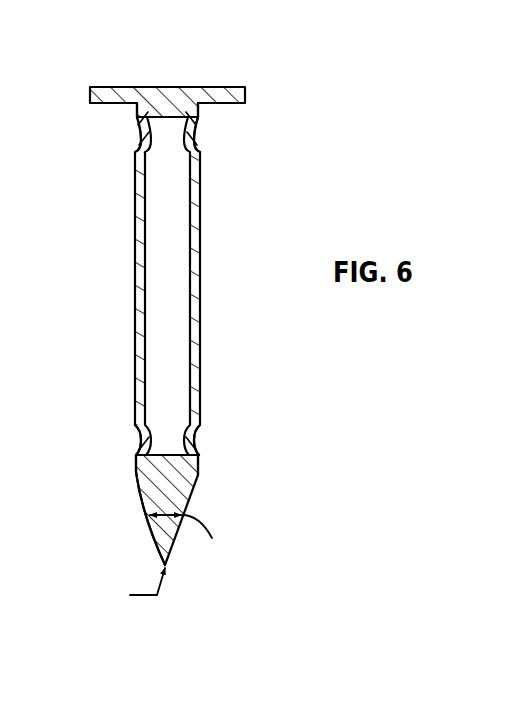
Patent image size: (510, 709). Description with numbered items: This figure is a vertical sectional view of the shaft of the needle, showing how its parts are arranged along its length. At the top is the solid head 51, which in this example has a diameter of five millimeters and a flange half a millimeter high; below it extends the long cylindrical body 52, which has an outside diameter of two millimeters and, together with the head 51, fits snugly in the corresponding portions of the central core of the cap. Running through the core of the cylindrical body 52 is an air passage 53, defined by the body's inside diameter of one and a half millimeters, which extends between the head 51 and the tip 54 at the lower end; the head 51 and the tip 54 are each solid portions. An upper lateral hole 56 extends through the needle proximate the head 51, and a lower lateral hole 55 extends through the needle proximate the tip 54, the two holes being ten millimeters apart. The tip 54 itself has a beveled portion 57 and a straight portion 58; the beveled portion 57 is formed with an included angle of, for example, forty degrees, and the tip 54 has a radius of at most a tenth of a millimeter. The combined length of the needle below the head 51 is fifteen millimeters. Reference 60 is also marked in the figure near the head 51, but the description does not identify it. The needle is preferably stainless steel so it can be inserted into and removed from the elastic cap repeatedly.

The head 51 is at (232, 118).
The cylindrical body 52 is at (230, 305).
The air passage 53 is at (170, 382).
The tip portion 54 is at (175, 529).
The lower lateral hole 55 is at (200, 446).
The upper lateral hole 56 is at (196, 138).
The beveled portion 57 is at (152, 537).
The straight portion 58 is at (135, 468).
The head boss 60 is at (200, 113).